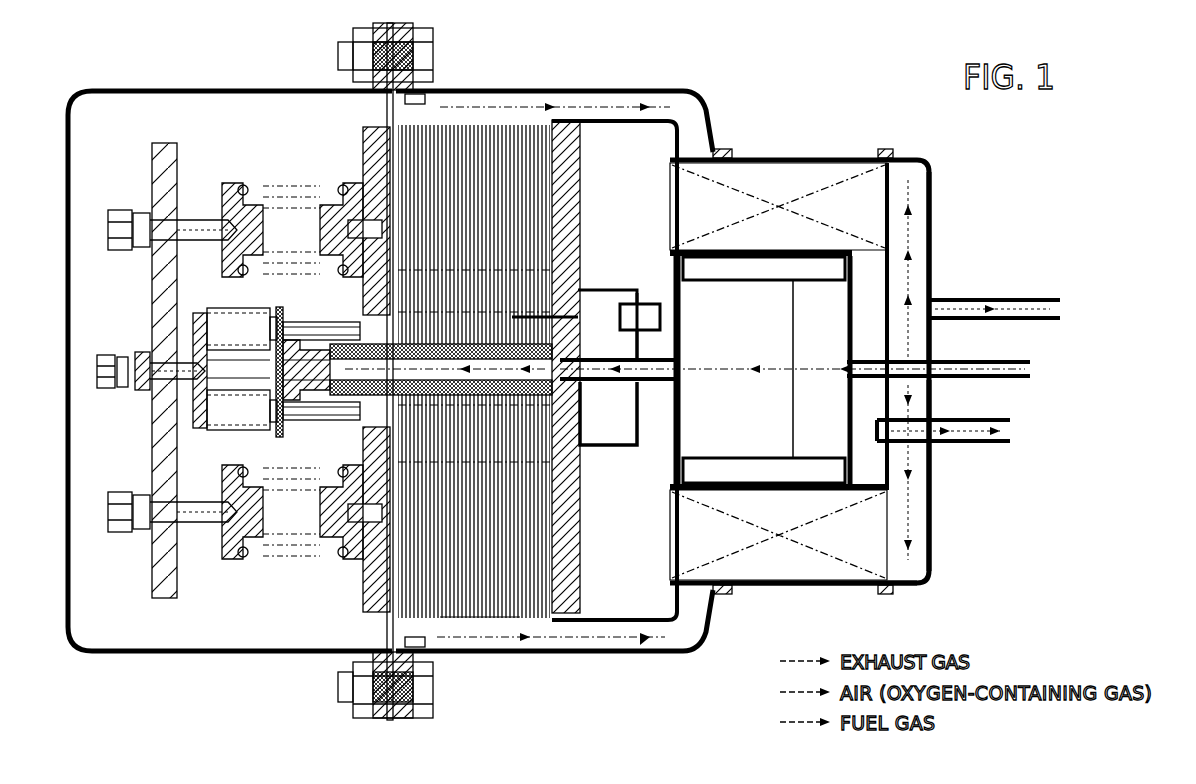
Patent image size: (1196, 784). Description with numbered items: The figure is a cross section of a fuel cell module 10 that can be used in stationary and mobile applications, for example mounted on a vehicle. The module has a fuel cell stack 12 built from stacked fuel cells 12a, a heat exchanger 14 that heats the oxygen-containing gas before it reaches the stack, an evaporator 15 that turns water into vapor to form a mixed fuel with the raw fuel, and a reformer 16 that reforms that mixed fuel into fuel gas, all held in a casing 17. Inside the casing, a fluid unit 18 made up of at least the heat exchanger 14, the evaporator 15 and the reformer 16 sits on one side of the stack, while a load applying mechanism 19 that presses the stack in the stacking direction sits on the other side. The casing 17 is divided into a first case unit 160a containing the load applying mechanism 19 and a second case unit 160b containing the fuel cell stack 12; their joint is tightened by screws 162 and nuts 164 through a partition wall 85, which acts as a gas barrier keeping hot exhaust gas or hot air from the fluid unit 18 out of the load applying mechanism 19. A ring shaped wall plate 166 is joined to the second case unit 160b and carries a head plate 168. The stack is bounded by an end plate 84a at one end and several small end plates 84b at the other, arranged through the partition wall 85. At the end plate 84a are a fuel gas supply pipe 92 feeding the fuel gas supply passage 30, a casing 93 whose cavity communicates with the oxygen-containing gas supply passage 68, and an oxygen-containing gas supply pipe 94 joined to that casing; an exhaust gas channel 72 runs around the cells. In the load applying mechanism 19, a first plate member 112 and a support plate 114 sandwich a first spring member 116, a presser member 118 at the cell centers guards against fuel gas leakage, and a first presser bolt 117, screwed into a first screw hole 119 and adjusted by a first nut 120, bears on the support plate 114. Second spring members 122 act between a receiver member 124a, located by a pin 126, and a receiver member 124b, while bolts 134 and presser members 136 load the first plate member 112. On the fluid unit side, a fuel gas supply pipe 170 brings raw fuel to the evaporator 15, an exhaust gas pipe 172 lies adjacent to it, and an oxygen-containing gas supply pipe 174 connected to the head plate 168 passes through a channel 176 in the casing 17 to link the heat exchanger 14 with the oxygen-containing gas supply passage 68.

The fuel cell module 10 is at (962, 138).
The fuel cell stack 12 is at (505, 119).
The fuel cells 12a is at (478, 620).
The heat exchanger 14 is at (858, 168).
The evaporator 15 is at (818, 320).
The reformer 16 is at (779, 290).
The casing 17 is at (726, 143).
The fluid unit 18 is at (812, 103).
The load applying mechanism 19 is at (207, 576).
The fuel gas supply passage 30 is at (556, 383).
The oxygen-containing gas supply passage 68 is at (556, 319).
The exhaust gas channel 72 is at (533, 651).
The end plate 84a is at (581, 191).
The end plates 84b is at (364, 141).
The partition wall 85 is at (386, 114).
The fuel gas supply pipe 92 is at (645, 384).
The casing 93 is at (613, 447).
The oxygen-containing gas supply pipe 94 is at (641, 304).
The first plate member 112 is at (290, 432).
The support plate 114 is at (202, 431).
The first spring member 116 is at (281, 310).
The first presser bolt 117 is at (187, 390).
The presser member 118 is at (325, 322).
The first screw hole 119 is at (130, 354).
The first nut 120 is at (141, 390).
The second spring member 122 is at (250, 188).
The receiver member 124a is at (344, 184).
The receiver member 124b is at (238, 184).
The pin 126 is at (319, 233).
The bolts 134 is at (236, 384).
The presser members 136 is at (240, 358).
The first case unit 160a is at (262, 89).
The second case unit 160b is at (516, 90).
The screws 162 is at (434, 56).
The nuts 164 is at (338, 56).
The wall plate 166 is at (772, 588).
The head plate 168 is at (932, 521).
The fuel gas supply pipe 170 is at (1009, 362).
The exhaust gas pipe 172 is at (987, 444).
The oxygen-containing gas supply pipe 174 is at (998, 300).
The channel 176 is at (912, 190).